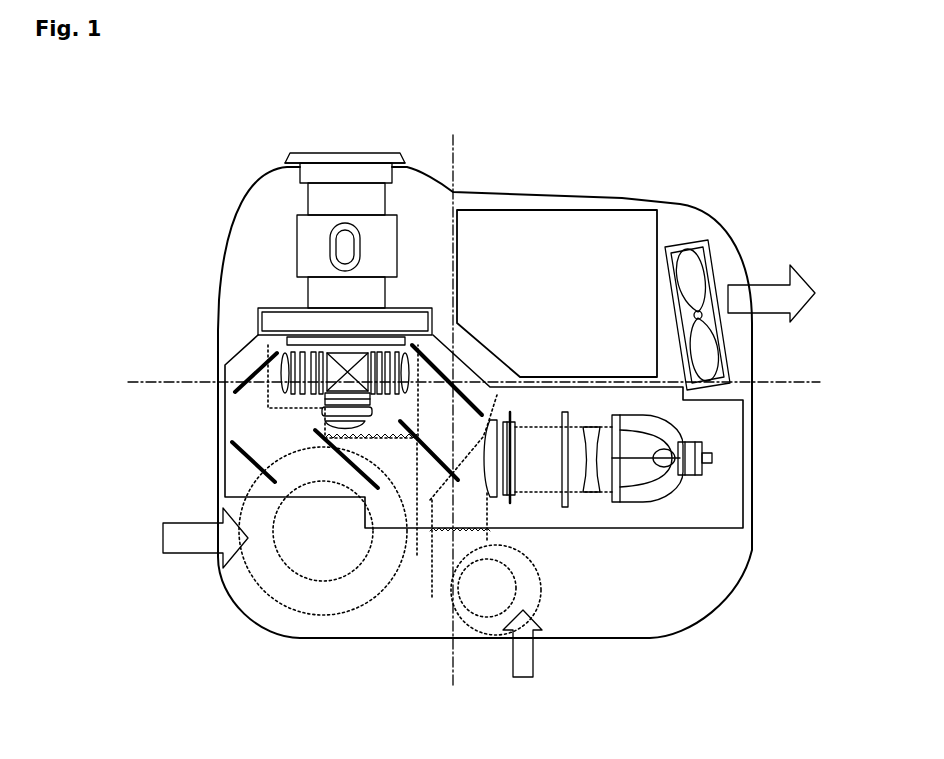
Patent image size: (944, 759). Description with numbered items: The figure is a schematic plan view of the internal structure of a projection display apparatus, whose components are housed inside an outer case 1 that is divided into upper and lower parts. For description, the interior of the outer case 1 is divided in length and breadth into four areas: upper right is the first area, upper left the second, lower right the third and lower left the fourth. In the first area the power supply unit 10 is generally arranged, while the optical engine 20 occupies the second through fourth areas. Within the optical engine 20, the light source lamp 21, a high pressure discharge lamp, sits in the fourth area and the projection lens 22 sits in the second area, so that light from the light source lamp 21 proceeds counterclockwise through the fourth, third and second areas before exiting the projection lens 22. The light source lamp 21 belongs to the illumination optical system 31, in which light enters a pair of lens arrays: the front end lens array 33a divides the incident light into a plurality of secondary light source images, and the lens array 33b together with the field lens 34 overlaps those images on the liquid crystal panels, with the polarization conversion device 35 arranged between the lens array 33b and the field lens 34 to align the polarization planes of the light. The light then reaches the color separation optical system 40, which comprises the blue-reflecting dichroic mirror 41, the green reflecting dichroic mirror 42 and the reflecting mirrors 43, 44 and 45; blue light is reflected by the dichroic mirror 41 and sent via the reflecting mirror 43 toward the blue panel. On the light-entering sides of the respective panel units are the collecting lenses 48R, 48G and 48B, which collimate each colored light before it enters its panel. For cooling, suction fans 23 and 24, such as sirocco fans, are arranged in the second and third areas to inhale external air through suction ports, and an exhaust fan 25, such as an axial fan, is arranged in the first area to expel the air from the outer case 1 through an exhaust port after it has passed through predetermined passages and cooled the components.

The outer case 1 is at (622, 198).
The power supply unit 10 is at (660, 225).
The optical engine 20 is at (743, 478).
The light source lamp 21 is at (680, 423).
The projection lens 22 is at (353, 153).
The suction fan 23 is at (484, 628).
The suction fan 24 is at (292, 610).
The exhaust fan 25 is at (710, 240).
The illumination optical system 31 is at (623, 511).
The front end lens array 33a is at (567, 508).
The lens array 33b is at (505, 500).
The field lens 34 is at (496, 425).
The polarization conversion device 35 is at (512, 503).
The color separation optical system 40 is at (248, 432).
The blue-reflecting dichroic mirror 41 is at (440, 464).
The green reflecting dichroic mirror 42 is at (342, 447).
The reflecting mirror 43 is at (458, 392).
The reflecting mirror 44 is at (248, 462).
The reflecting mirror 45 is at (245, 374).
The collecting lens 48R is at (437, 332).
The collecting lens 48G is at (280, 393).
The collecting lens 48B is at (372, 425).